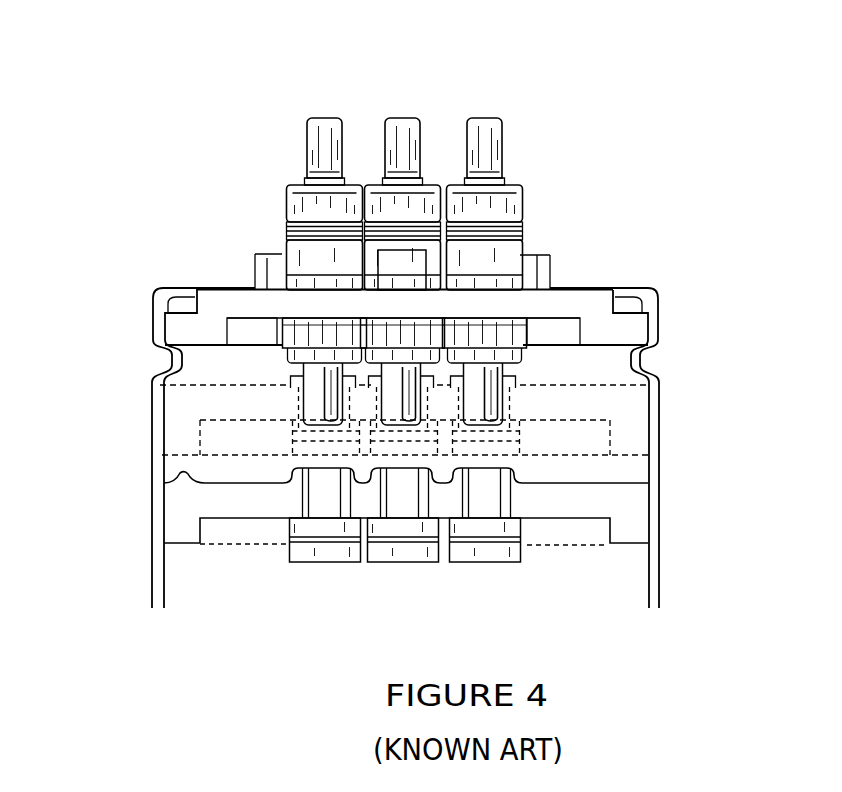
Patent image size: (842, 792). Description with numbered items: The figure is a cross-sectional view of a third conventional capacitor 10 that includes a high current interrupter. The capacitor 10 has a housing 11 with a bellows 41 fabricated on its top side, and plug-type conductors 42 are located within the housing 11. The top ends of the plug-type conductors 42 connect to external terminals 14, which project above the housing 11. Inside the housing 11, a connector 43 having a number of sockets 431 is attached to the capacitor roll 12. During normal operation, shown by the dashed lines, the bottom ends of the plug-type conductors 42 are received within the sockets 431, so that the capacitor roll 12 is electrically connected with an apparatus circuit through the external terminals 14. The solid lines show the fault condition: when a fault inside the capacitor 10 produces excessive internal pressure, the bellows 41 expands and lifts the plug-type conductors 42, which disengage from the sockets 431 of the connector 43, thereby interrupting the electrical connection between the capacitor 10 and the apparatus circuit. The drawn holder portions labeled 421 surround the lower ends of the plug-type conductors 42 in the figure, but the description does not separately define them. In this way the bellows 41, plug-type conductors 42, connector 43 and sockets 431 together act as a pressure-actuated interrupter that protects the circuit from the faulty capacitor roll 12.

The capacitor 10 is at (643, 165).
The housing 11 is at (657, 442).
The capacitor roll 12 is at (623, 584).
The external terminals 14 is at (332, 120).
The bellows 41 is at (660, 355).
The plug-type conductors 42 is at (498, 403).
The pin holder 421 is at (322, 398).
The connector 43 is at (610, 500).
The sockets 431 is at (290, 459).